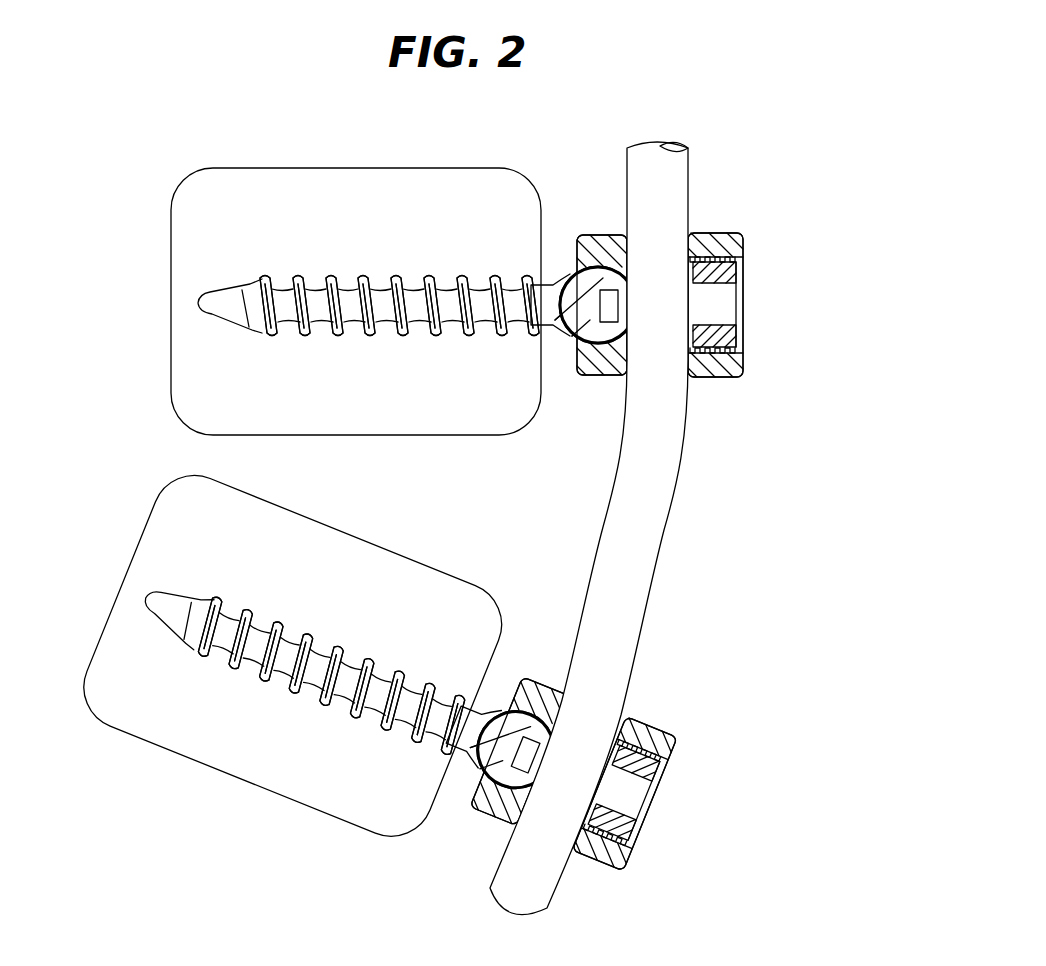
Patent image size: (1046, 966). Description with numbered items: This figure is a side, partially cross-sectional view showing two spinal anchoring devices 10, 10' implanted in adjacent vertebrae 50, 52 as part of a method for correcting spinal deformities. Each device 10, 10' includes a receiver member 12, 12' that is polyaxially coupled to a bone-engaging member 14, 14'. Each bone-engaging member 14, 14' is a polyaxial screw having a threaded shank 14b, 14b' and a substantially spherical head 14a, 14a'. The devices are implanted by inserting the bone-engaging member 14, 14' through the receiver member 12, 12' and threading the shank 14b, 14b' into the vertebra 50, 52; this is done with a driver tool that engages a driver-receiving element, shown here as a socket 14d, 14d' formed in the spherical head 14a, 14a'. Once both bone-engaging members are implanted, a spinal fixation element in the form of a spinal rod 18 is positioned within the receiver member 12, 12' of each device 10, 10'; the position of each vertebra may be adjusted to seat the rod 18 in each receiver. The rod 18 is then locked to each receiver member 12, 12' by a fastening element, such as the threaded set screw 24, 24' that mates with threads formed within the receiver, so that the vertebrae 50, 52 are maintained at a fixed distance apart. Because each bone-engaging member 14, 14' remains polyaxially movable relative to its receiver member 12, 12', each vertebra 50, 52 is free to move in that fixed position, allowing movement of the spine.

The spinal anchoring device 10 is at (736, 314).
The spinal anchoring device 10' is at (613, 798).
The receiver member 12 is at (742, 276).
The receiver member 12' is at (654, 778).
The bone-engaging member 14 is at (373, 321).
The bone-engaging member 14' is at (301, 682).
The spherical head 14a is at (582, 341).
The spherical head 14a' is at (484, 777).
The threaded shank 14b is at (399, 381).
The threaded shank 14b' is at (331, 723).
The socket 14d is at (595, 255).
The socket 14d' is at (514, 705).
The spinal rod 18 is at (653, 493).
The set screw 24 is at (756, 304).
The set screw 24' is at (662, 792).
The vertebra 50 is at (273, 222).
The vertebra 52 is at (229, 553).